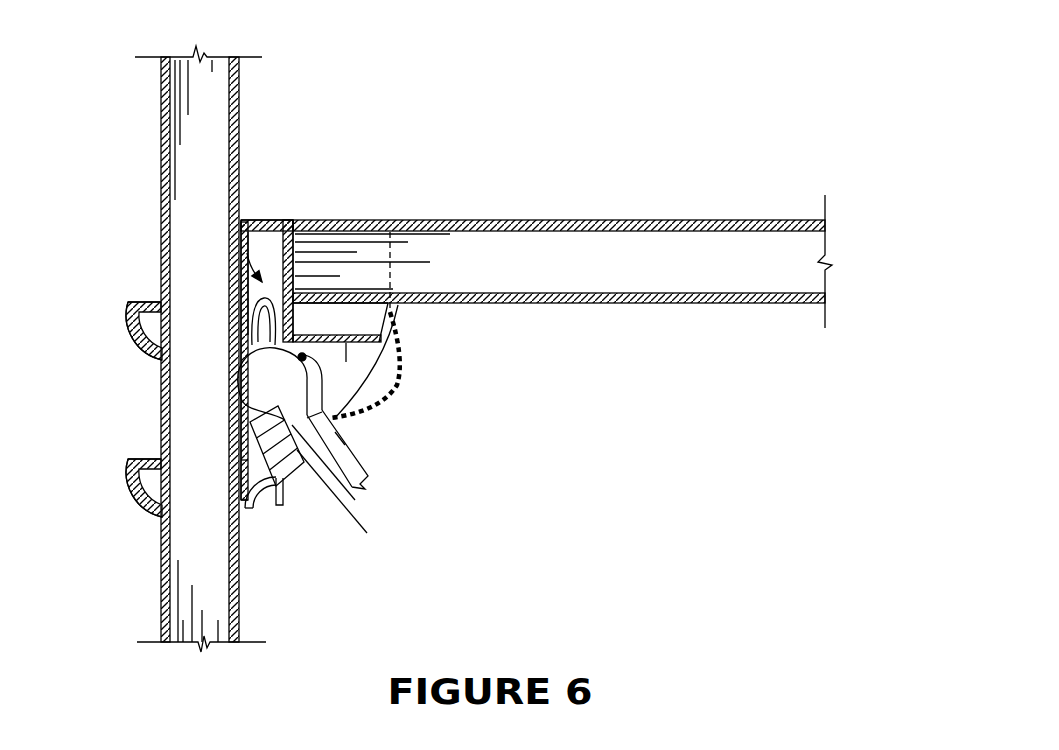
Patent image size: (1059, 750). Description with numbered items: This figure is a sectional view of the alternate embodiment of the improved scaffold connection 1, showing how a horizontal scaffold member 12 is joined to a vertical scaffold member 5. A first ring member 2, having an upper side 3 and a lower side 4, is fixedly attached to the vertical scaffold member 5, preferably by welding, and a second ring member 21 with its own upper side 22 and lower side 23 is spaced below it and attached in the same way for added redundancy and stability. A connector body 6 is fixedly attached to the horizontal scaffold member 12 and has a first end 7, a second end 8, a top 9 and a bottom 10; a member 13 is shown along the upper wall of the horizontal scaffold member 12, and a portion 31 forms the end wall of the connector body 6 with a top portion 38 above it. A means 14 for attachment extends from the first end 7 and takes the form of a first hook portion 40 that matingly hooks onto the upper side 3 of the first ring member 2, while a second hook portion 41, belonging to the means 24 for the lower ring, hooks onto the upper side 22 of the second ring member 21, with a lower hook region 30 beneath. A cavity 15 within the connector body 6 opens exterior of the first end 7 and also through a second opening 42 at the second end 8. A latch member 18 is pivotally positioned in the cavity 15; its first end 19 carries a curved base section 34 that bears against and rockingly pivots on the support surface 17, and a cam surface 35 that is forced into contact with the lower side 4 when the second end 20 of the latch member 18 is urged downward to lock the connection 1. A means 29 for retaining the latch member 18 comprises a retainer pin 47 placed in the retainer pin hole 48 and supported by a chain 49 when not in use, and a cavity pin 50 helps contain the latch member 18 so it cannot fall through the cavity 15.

The scaffold connection 1 is at (470, 418).
The first ring member 2 is at (114, 313).
The upper side 3 is at (87, 304).
The lower side 4 is at (132, 354).
The vertical scaffold member 5 is at (242, 607).
The connector body 6 is at (397, 310).
The first end 7 is at (253, 418).
The second end 8 is at (388, 400).
The top 9 is at (293, 217).
The bottom 10 is at (295, 477).
The horizontal scaffold member 12 is at (733, 303).
The beam top wall 13 is at (638, 220).
The means for attachment 14 is at (237, 243).
The cavity 15 is at (359, 352).
The support surface 17 is at (343, 501).
The latch member 18 is at (283, 375).
The first end 19 is at (247, 338).
The second end 20 is at (356, 488).
The second ring member 21 is at (114, 471).
The upper side 22 is at (86, 468).
The lower side 23 is at (130, 503).
The means 24 is at (226, 492).
The means for retaining 29 is at (340, 440).
The hook bottom 30 is at (272, 507).
The clip end wall 31 is at (273, 222).
The curved base section 34 is at (240, 395).
The cam surface 35 is at (240, 376).
The clip top 38 is at (252, 220).
The first hook portion 40 is at (240, 270).
The second hook portion 41 is at (227, 467).
The second opening 42 is at (355, 500).
The retainer pin 47 is at (333, 425).
The retainer pin hole 48 is at (312, 397).
The chain 49 is at (402, 389).
The cavity pin 50 is at (318, 330).